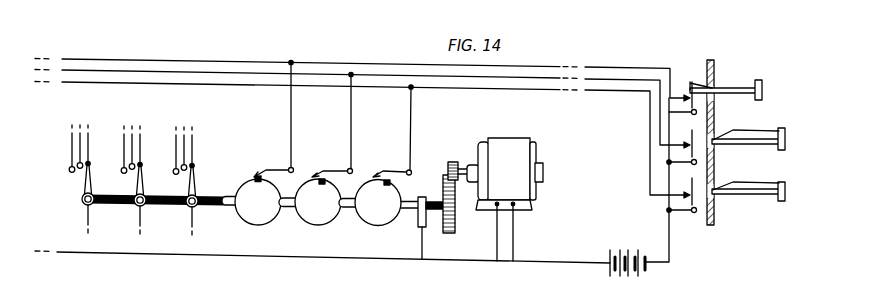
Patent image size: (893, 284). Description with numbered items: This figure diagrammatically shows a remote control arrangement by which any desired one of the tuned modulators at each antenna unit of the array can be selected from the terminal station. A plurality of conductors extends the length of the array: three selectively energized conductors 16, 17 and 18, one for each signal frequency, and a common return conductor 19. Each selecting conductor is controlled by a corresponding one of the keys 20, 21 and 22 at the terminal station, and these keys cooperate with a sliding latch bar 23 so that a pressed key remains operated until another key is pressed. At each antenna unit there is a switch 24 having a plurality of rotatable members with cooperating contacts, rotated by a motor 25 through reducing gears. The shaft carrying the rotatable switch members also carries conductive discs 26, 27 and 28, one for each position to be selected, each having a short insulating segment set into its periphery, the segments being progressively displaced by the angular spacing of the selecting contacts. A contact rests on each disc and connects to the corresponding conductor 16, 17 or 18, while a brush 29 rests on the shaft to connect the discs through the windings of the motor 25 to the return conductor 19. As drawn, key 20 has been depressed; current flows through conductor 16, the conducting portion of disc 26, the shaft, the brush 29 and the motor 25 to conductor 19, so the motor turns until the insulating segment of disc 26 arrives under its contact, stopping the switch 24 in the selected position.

The selectively energized conductor 16 is at (213, 59).
The selectively energized conductor 17 is at (245, 70).
The selectively energized conductor 18 is at (278, 82).
The common return conductor 19 is at (547, 262).
The key 20 is at (762, 85).
The key 21 is at (785, 140).
The key 22 is at (787, 188).
The sliding latch bar 23 is at (716, 214).
The switch 24 is at (166, 167).
The motor 25 is at (511, 138).
The disc 26 is at (250, 225).
The disc 27 is at (313, 225).
The disc 28 is at (369, 226).
The brush 29 is at (422, 197).